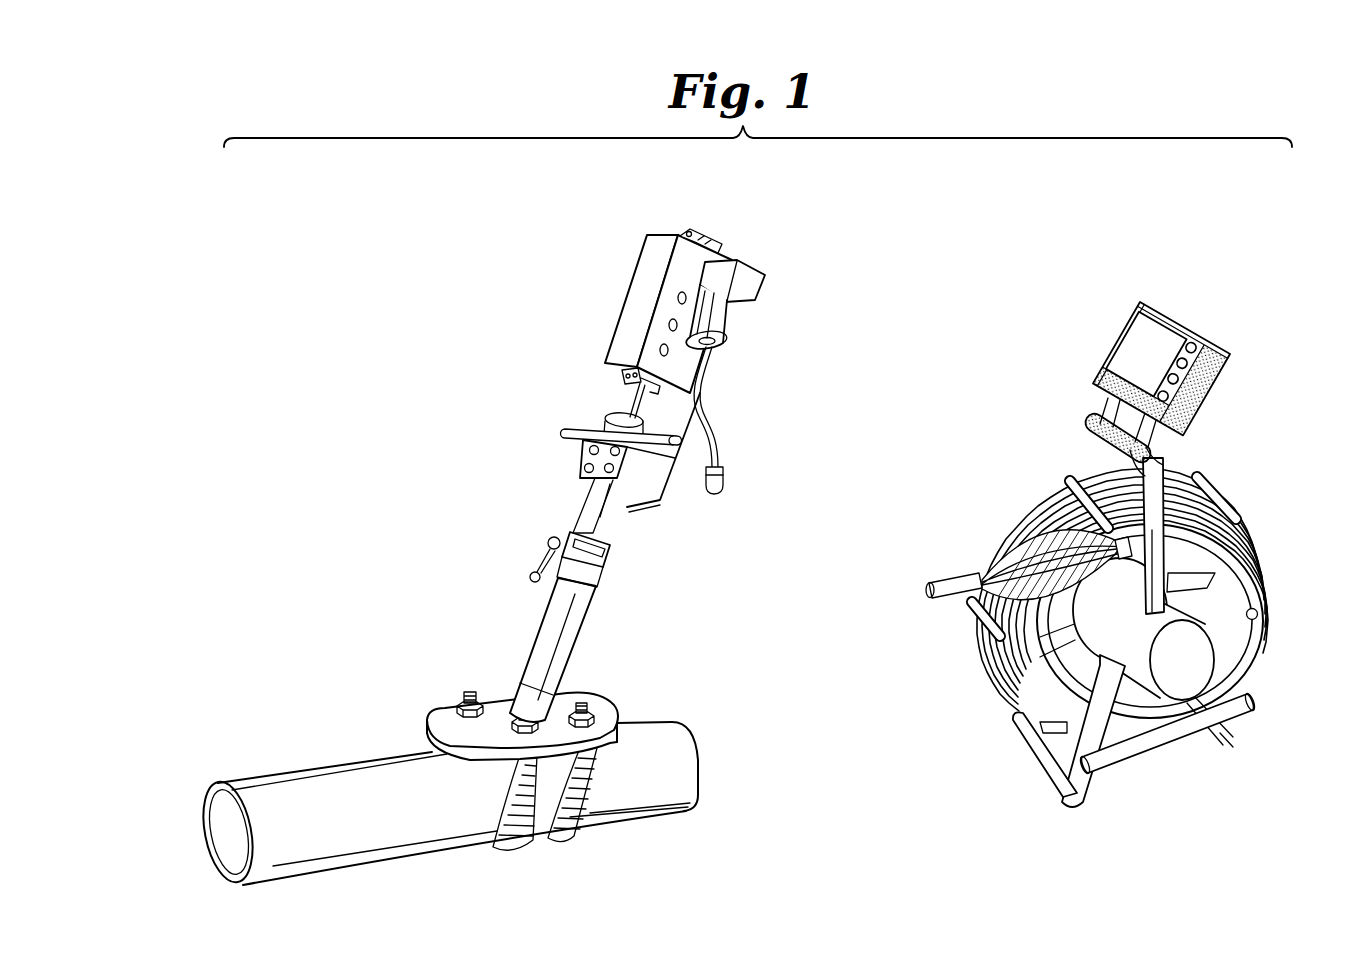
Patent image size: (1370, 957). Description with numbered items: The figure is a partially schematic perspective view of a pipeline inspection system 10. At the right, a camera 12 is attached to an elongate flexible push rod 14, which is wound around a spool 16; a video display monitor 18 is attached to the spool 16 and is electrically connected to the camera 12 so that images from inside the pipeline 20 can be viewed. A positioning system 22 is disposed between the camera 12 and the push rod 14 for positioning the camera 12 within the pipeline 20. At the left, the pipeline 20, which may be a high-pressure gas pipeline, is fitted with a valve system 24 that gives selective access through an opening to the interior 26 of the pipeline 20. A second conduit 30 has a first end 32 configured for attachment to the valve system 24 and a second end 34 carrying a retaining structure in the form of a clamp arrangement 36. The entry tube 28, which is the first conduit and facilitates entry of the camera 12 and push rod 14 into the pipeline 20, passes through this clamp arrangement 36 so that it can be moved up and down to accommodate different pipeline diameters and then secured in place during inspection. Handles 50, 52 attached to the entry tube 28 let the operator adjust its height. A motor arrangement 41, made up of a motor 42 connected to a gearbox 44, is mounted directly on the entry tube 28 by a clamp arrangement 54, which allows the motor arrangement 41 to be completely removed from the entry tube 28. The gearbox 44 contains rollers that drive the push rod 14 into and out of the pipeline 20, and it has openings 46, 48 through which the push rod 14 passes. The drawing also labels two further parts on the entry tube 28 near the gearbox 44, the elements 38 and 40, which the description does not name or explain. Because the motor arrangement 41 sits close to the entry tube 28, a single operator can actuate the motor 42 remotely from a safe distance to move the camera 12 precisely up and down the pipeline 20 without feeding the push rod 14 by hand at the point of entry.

The pipeline inspection system 10 is at (1071, 94).
The camera 12 is at (943, 581).
The push rod 14 is at (1258, 533).
The spool 16 is at (1258, 616).
The video display monitor 18 is at (1123, 330).
The pipeline 20 is at (342, 762).
The positioning system 22 is at (992, 550).
The valve system 24 is at (623, 714).
The interior 26 is at (212, 823).
The entry tube 28 is at (612, 523).
The second conduit 30 is at (540, 628).
The first end 32 is at (565, 690).
The second end 34 is at (615, 555).
The clamp arrangement 36 is at (550, 541).
The rod 38 is at (612, 400).
The upper collar 40 is at (604, 420).
The motor arrangement 41 is at (735, 258).
The motor 42 is at (738, 328).
The gearbox 44 is at (643, 260).
The opening 46 is at (699, 232).
The opening 48 is at (617, 375).
The handle 50 is at (568, 432).
The handle 52 is at (677, 432).
The clamp arrangement 54 is at (583, 457).